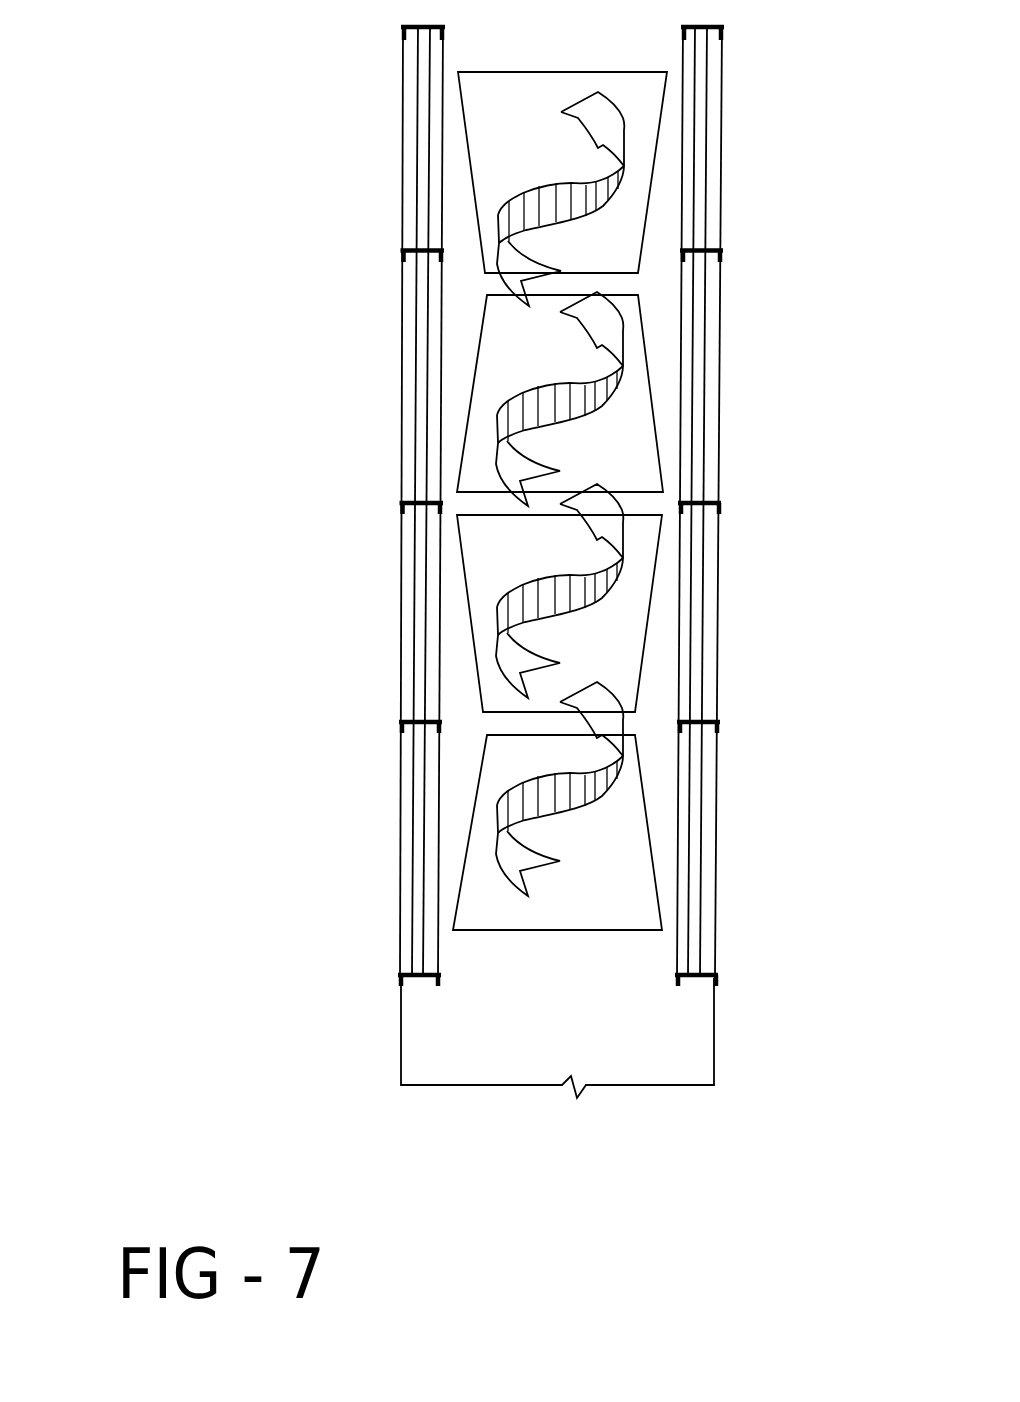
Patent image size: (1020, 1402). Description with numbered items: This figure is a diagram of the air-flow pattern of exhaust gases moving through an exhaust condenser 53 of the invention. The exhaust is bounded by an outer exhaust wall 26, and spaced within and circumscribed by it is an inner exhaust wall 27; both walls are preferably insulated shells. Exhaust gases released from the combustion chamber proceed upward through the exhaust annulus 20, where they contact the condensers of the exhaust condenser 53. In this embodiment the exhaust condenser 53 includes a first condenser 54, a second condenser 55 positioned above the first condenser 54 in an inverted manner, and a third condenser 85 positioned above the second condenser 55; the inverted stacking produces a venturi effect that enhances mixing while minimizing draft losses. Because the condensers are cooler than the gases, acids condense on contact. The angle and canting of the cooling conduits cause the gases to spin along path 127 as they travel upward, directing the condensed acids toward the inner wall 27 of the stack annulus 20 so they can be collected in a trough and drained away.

The exhaust annulus 20 is at (612, 1037).
The outer exhaust wall 26 is at (405, 138).
The inner exhaust wall 27 is at (440, 335).
The exhaust condenser 53 is at (179, 840).
The first condenser 54 is at (612, 892).
The second condenser 55 is at (480, 561).
The third condenser 85 is at (625, 442).
The path 127 is at (495, 833).